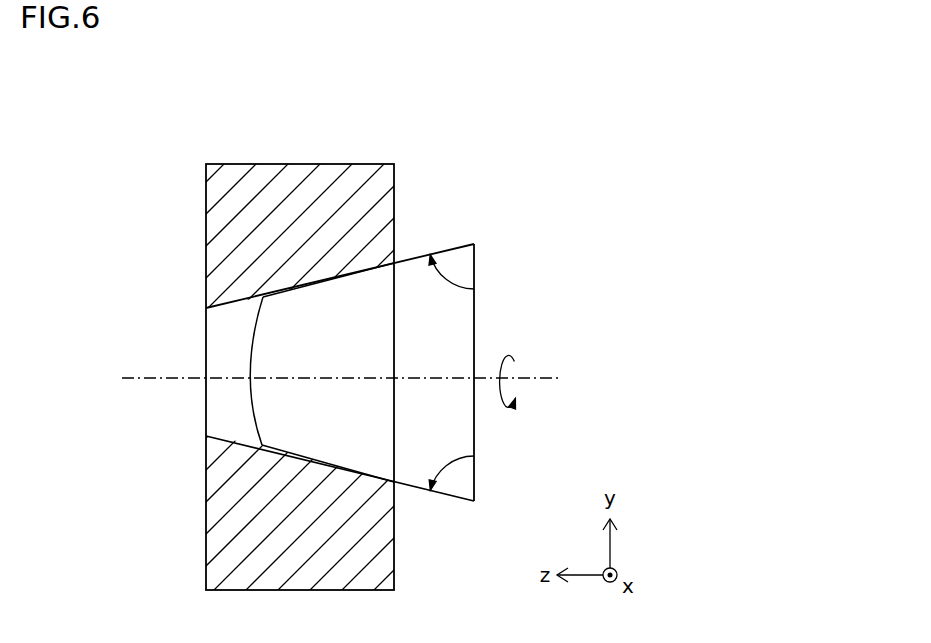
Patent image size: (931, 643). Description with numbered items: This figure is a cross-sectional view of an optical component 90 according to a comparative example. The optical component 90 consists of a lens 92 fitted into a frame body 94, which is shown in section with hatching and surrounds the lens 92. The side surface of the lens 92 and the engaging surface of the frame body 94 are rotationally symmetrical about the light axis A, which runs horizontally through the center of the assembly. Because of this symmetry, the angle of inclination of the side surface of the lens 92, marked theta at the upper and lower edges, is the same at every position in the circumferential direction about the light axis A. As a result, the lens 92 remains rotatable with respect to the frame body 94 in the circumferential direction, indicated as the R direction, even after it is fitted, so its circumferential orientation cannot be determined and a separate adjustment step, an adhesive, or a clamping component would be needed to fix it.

The optical component 90 is at (407, 331).
The lens 92 is at (454, 217).
The frame body 94 is at (358, 145).
The light axis A is at (147, 377).
The R direction R is at (518, 362).